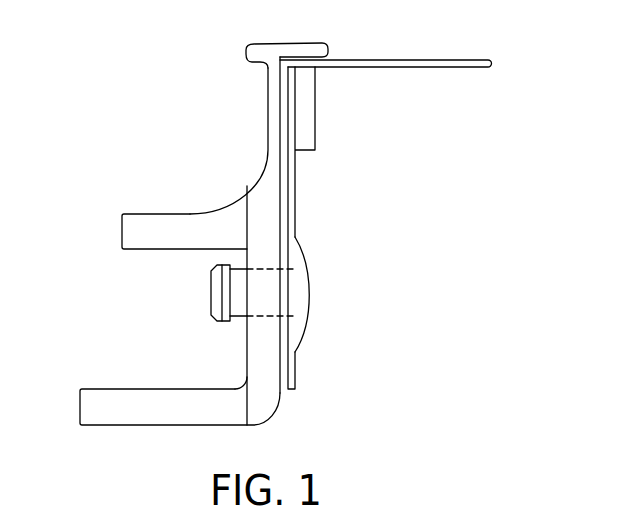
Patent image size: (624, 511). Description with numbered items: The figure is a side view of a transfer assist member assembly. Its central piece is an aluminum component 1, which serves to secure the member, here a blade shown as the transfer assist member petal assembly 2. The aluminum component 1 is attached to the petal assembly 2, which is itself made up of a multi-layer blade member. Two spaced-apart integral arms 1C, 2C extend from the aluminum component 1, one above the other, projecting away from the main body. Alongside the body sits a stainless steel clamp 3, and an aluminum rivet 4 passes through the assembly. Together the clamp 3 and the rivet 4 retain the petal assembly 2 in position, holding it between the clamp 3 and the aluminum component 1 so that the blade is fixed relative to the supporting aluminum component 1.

The aluminum component 1 is at (258, 188).
The integral arm 1C is at (135, 233).
The transfer assist member petal assembly 2 is at (392, 59).
The integral arm 2C is at (87, 409).
The stainless steel clamp 3 is at (305, 119).
The aluminum rivet 4 is at (305, 307).